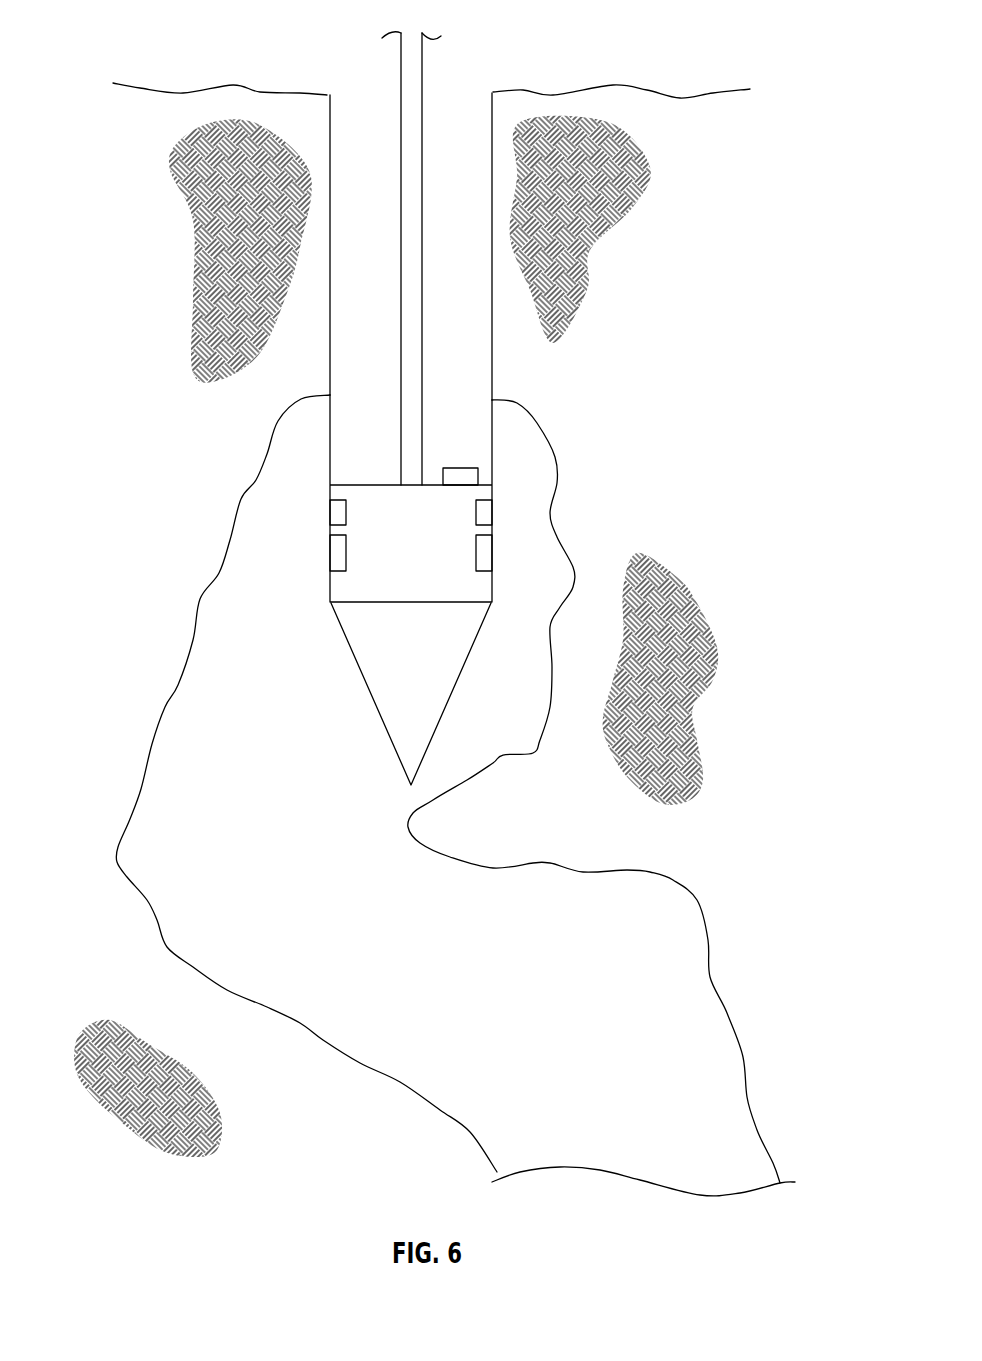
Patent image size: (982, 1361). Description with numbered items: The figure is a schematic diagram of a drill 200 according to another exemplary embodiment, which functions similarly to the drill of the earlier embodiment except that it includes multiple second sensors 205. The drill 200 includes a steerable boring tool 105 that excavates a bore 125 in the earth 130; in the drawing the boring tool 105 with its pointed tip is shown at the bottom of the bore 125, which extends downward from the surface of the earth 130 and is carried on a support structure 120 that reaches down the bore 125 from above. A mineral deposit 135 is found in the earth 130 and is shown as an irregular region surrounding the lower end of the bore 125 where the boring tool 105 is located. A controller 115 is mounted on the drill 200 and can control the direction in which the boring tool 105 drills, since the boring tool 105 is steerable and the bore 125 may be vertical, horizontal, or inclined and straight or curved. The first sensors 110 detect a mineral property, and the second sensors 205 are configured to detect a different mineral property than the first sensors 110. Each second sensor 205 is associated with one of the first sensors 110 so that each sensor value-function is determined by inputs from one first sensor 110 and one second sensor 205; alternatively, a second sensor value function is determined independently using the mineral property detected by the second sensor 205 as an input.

The steerable boring tool 105 is at (361, 682).
The sensors 110 is at (346, 548).
The controller 115 is at (455, 467).
The support structure 120 is at (411, 158).
The bore 125 is at (482, 111).
The earth 130 is at (585, 100).
The mineral deposit 135 is at (145, 815).
The drill 200 is at (343, 762).
The second sensors 205 is at (346, 508).